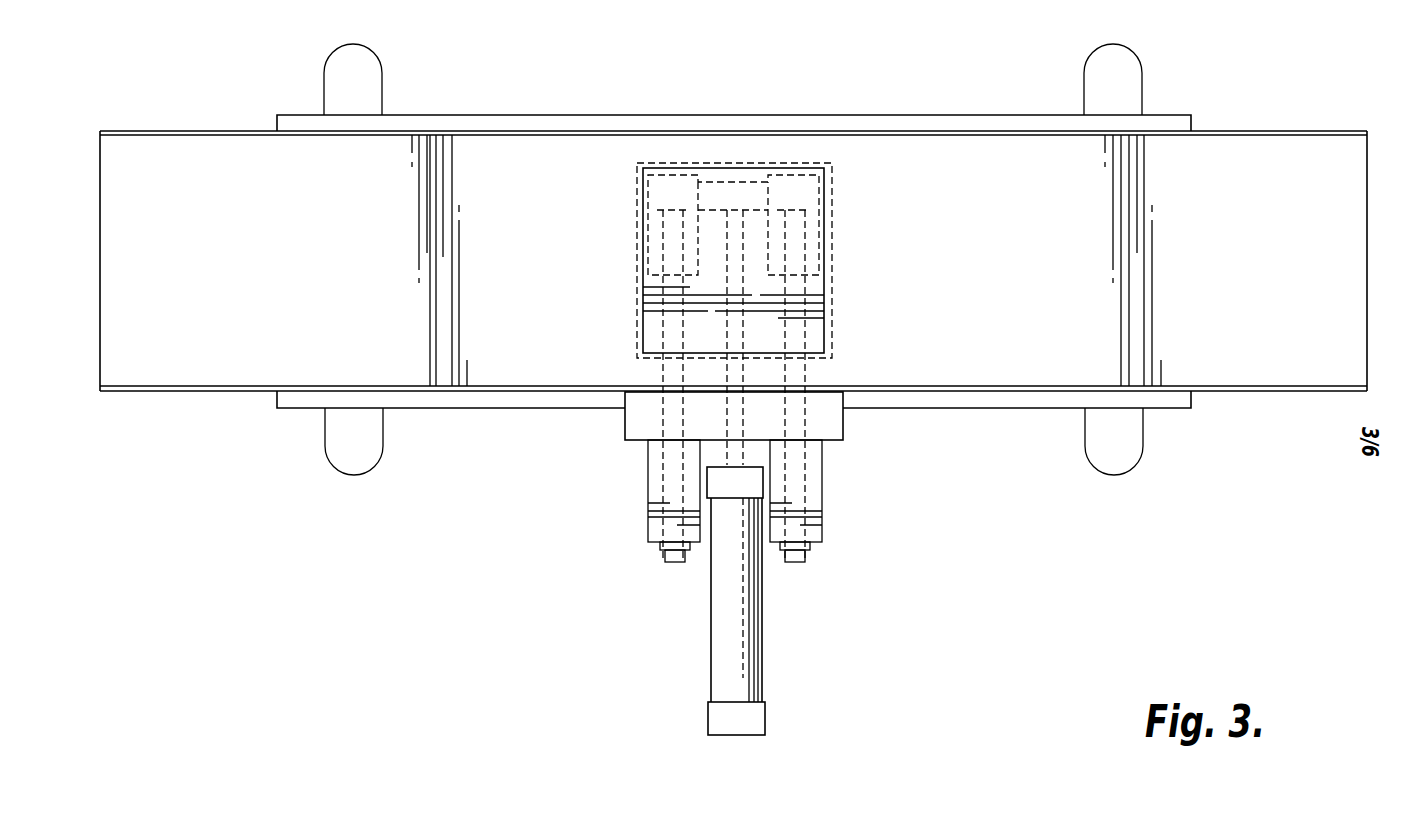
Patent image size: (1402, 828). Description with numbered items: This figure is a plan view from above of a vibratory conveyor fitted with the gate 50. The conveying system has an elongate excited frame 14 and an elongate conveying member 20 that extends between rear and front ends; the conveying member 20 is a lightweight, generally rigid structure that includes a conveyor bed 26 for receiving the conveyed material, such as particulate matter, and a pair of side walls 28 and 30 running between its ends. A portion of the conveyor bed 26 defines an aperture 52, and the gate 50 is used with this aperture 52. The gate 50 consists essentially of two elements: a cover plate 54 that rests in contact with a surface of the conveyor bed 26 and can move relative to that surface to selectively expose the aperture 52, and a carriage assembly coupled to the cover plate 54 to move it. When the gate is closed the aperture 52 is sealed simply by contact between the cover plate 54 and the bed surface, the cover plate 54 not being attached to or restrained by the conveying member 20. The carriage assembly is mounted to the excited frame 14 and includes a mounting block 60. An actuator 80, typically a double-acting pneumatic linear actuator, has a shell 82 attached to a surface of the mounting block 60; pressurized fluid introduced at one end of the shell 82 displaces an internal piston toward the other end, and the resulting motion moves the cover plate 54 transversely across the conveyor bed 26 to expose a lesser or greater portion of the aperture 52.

The excited frame 14 is at (480, 417).
The conveying member 20 is at (1370, 359).
The conveyor bed 26 is at (1011, 261).
The side wall 28 is at (211, 395).
The side wall 30 is at (1284, 131).
The gate 50 is at (844, 218).
The aperture 52 is at (813, 353).
The cover plate 54 is at (637, 242).
The mounting block 60 is at (822, 495).
The actuator 80 is at (779, 669).
The shell 82 is at (762, 628).